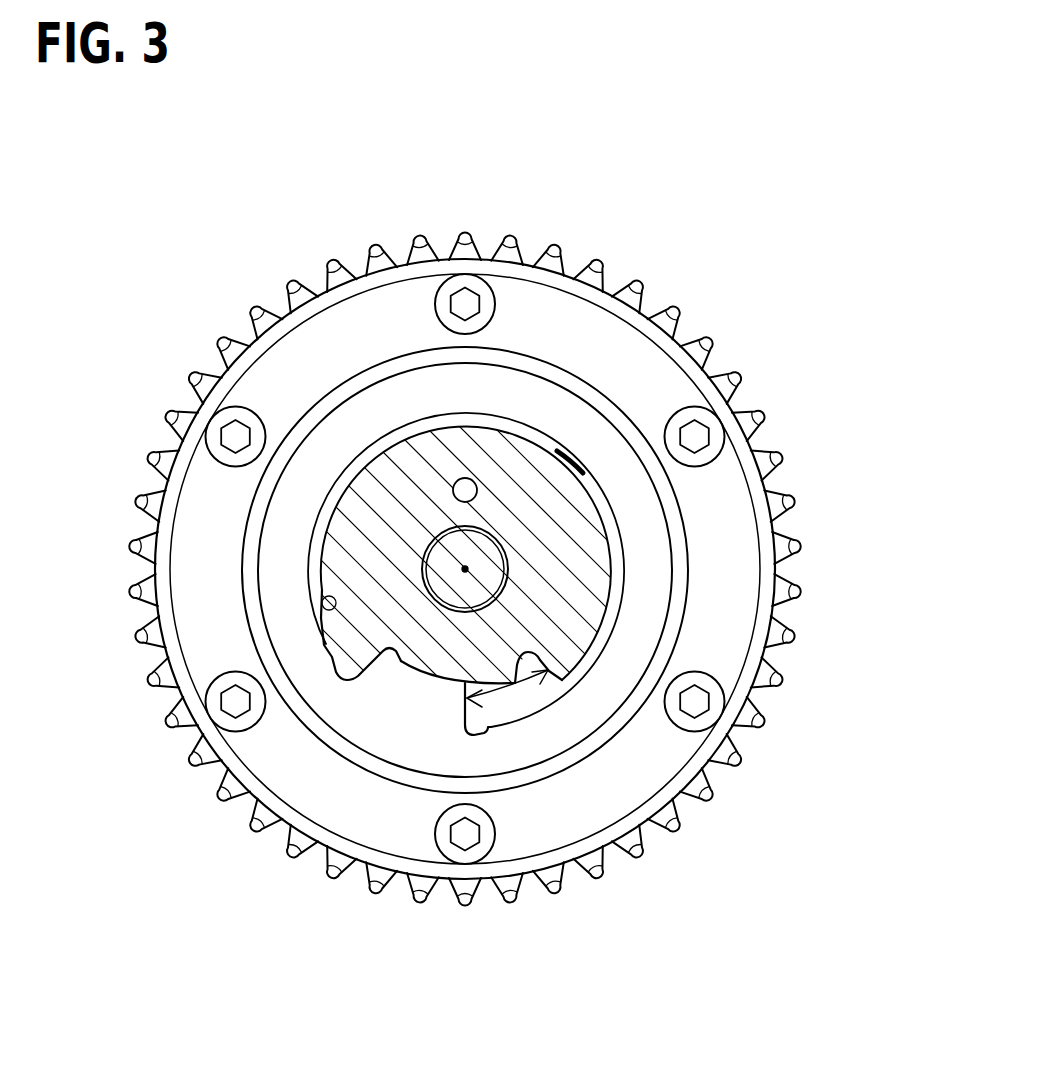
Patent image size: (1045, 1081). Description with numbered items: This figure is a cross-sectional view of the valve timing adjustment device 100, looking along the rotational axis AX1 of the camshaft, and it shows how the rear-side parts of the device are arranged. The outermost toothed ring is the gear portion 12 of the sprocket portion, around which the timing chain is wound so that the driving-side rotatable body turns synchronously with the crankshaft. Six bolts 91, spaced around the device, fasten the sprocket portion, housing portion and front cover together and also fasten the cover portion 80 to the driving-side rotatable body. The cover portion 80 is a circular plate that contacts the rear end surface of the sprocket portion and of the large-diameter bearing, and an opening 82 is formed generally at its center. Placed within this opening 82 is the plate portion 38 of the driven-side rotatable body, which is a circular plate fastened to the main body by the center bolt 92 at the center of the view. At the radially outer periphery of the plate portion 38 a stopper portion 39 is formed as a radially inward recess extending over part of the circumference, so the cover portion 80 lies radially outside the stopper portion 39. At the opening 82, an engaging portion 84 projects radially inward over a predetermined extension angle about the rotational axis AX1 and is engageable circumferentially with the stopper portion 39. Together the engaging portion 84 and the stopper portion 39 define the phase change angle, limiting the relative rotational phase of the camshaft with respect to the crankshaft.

The valve timing adjustment device 100 is at (828, 262).
The gear portion 12 is at (665, 320).
The bolts 91 is at (693, 437).
The cover portion 80 is at (290, 537).
The plate portion 38 is at (563, 510).
The center bolt 92 is at (488, 567).
The rotational axis AX1 is at (467, 571).
The opening 82 is at (322, 592).
The engaging portion 84 is at (412, 685).
The stopper portion 39 is at (541, 683).